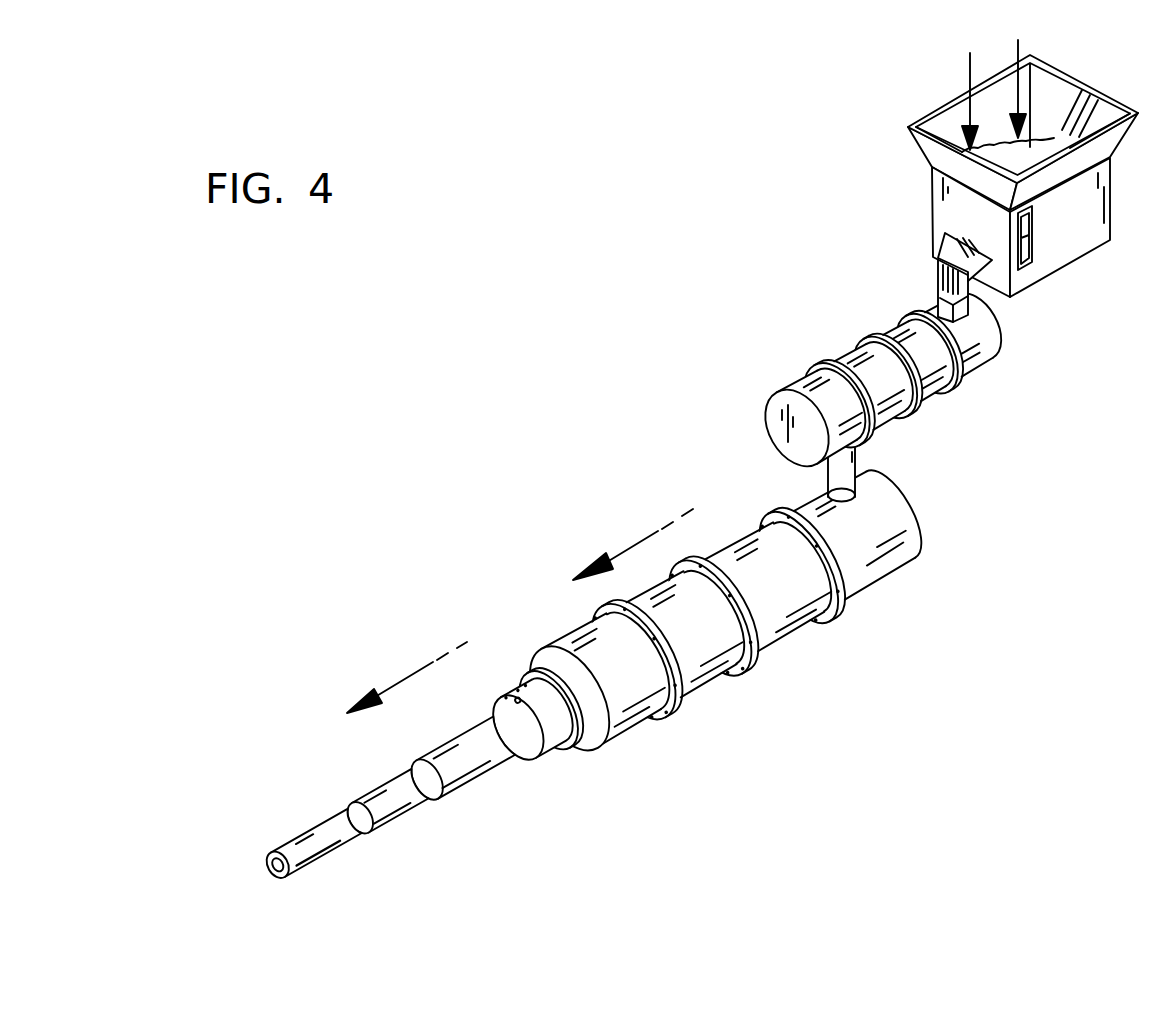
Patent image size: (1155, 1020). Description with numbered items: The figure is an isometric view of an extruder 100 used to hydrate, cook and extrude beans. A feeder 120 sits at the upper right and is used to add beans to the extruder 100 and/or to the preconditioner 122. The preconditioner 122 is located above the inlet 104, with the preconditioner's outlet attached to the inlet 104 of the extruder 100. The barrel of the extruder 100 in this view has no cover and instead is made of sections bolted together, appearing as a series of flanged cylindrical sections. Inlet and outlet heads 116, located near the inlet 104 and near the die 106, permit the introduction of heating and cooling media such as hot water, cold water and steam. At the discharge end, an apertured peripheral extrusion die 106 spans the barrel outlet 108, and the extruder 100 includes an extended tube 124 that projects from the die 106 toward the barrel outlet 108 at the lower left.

The extruder 100 is at (522, 533).
The inlet 104 is at (838, 492).
The extrusion die 106 is at (533, 680).
The barrel outlet 108 is at (266, 865).
The inlet and outlet heads 116 is at (528, 688).
The feeder 120 is at (952, 213).
The preconditioner 122 is at (806, 370).
The extended tube 124 is at (331, 833).